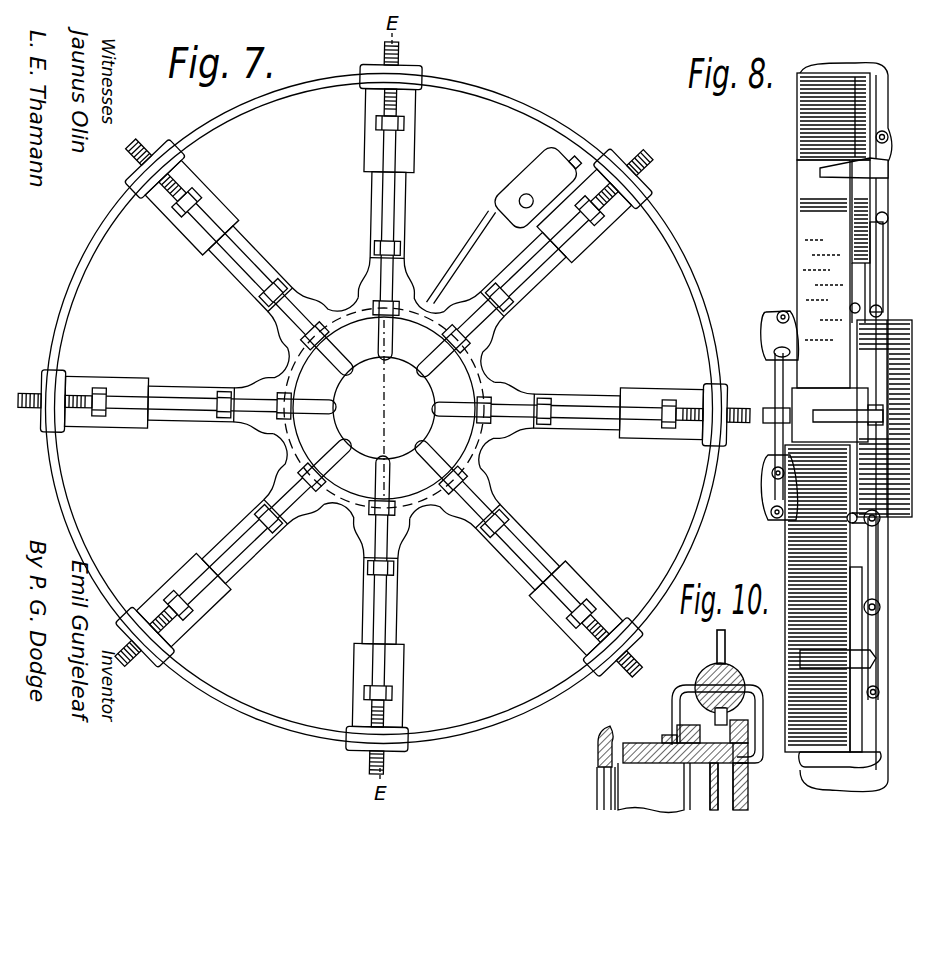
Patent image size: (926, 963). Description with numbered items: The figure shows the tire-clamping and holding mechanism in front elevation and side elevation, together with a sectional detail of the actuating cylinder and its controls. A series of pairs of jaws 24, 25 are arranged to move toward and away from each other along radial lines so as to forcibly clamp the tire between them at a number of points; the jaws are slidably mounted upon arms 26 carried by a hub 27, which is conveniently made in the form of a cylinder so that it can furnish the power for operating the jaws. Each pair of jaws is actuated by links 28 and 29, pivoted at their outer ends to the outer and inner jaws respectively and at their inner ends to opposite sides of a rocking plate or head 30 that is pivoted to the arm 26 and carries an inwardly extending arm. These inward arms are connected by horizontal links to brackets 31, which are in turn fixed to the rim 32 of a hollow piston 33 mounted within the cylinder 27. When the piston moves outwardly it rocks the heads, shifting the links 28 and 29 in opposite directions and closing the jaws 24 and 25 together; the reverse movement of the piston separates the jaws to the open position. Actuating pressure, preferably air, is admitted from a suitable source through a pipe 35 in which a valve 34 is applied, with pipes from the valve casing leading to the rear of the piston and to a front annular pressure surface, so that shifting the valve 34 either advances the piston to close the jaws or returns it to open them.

In FIG. 7, the outer jaw 24 is at (612, 162).
In FIG. 8, the outer jaw 24 is at (858, 64).
In FIG. 7, the inner jaw 25 is at (418, 92).
In FIG. 8, the inner jaw 25 is at (803, 172).
In FIG. 7, the arm 26 is at (411, 215).
In FIG. 8, the arm 26 is at (858, 278).
In FIG. 7, the hub 27 is at (384, 408).
In FIG. 8, the hub 27 is at (884, 418).
In FIG. 10, the hub 27 is at (750, 788).
In FIG. 8, the link 28 is at (882, 296).
In FIG. 7, the link 29 is at (238, 272).
In FIG. 7, the rocking plate or head 30 is at (390, 284).
In FIG. 8, the rocking plate or head 30 is at (880, 312).
In FIG. 7, the bracket 31 is at (290, 400).
In FIG. 8, the bracket 31 is at (772, 330).
In FIG. 7, the rim 32 is at (360, 352).
In FIG. 8, the rim 32 is at (788, 394).
In FIG. 10, the rim 32 is at (598, 760).
In FIG. 10, the hollow piston 33 is at (651, 788).
In FIG. 7, the valve 34 is at (517, 176).
In FIG. 10, the valve 34 is at (740, 672).
In FIG. 10, the pipe 35 is at (707, 676).